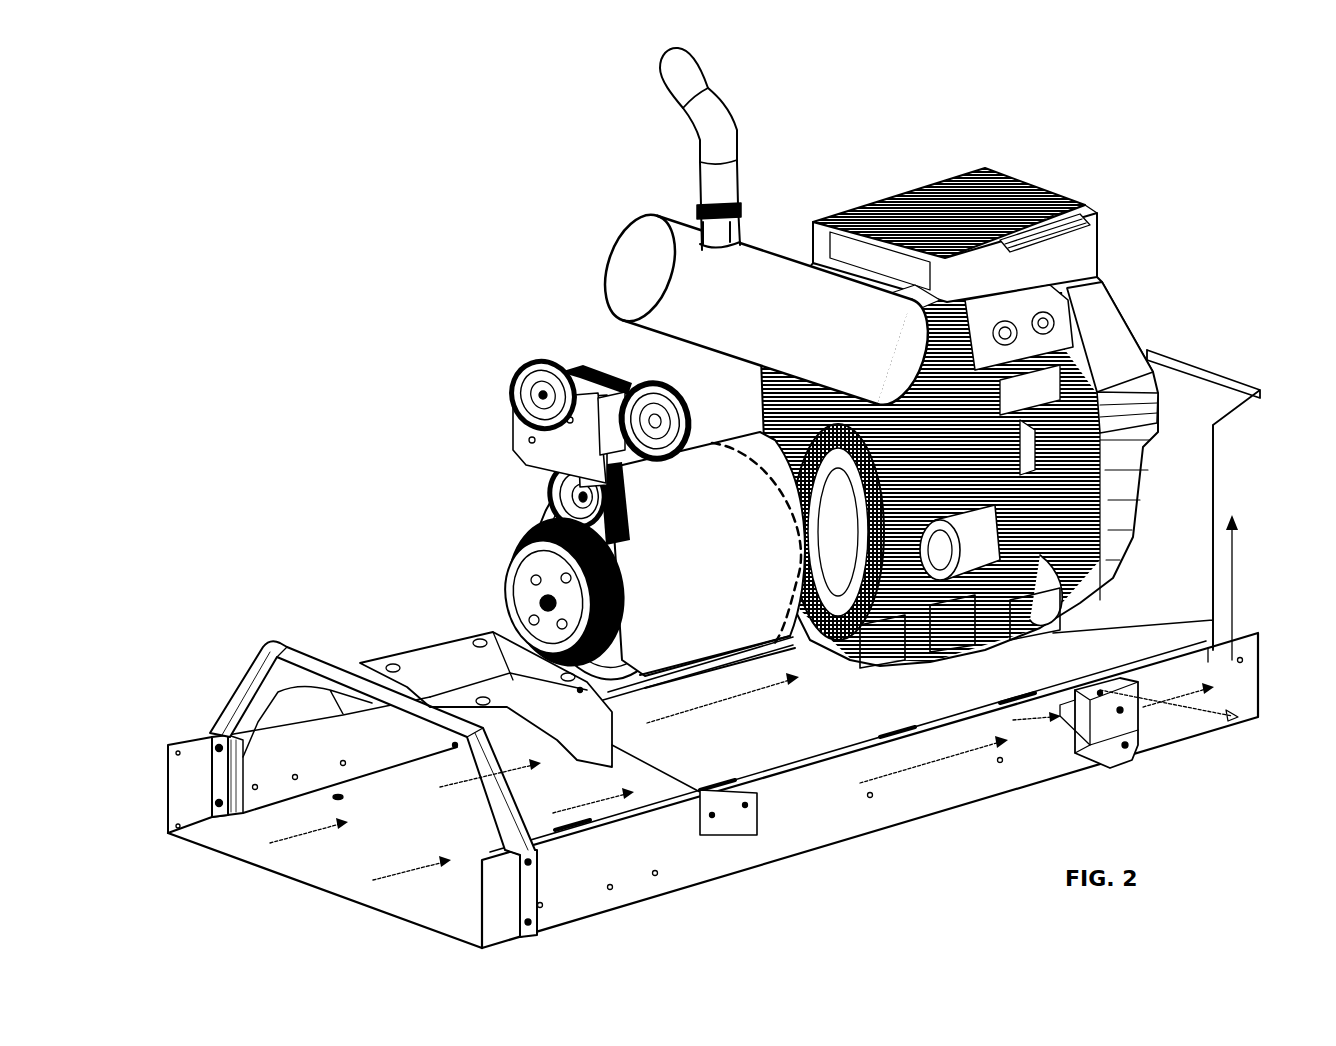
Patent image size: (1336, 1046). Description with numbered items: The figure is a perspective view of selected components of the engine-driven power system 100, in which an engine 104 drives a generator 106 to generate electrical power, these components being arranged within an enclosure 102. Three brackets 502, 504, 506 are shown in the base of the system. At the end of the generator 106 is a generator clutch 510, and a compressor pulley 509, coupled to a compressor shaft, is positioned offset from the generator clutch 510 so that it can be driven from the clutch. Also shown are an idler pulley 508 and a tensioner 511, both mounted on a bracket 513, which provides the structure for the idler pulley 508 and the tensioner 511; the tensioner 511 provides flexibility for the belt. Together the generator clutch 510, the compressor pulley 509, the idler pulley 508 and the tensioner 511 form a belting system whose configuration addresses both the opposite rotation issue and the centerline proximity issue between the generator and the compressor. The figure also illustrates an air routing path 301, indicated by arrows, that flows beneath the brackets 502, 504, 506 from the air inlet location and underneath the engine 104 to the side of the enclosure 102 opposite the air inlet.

The power system 100 is at (240, 232).
The enclosure 102 is at (172, 779).
The engine 104 is at (1130, 273).
The generator 106 is at (745, 564).
The air routing path 301 is at (1236, 582).
The bracket 502 is at (228, 654).
The bracket 504 is at (478, 618).
The bracket 506 is at (1125, 755).
The idler pulley 508 is at (507, 357).
The compressor pulley 509 is at (540, 482).
The generator clutch 510 is at (505, 533).
The tensioner 511 is at (645, 364).
The bracket 513 is at (518, 424).